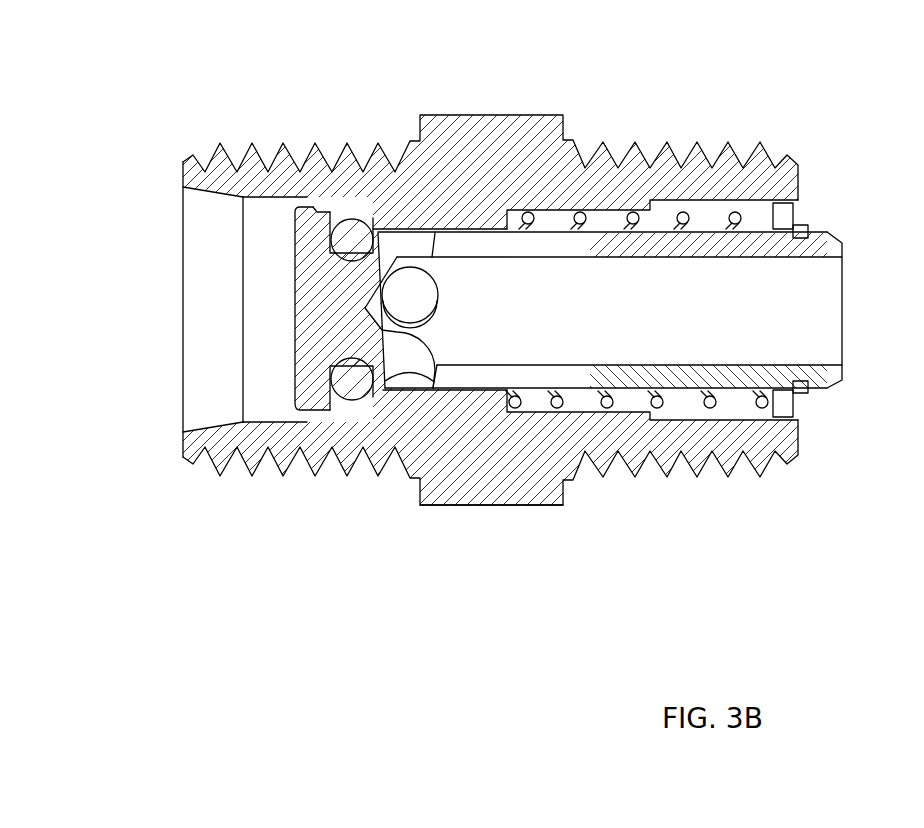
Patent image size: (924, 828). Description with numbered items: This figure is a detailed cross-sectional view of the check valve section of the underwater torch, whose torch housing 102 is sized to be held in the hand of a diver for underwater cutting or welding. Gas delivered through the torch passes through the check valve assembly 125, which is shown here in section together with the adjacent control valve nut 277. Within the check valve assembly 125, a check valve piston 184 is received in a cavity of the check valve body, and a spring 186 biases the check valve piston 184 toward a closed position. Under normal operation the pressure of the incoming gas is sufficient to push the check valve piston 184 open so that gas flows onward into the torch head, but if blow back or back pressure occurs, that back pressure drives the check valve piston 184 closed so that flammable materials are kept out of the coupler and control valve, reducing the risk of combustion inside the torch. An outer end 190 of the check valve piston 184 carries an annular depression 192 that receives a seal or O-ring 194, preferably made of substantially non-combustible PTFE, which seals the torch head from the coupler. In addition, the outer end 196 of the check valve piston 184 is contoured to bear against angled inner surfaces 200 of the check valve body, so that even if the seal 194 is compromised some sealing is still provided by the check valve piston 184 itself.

The torch housing 102 is at (408, 250).
The check valve assembly 125 is at (345, 140).
The check valve piston 184 is at (822, 383).
The spring 186 is at (710, 402).
The outer end of the check valve piston 190 is at (308, 358).
The annular depression 192 is at (350, 378).
The seal or O-ring 194 is at (345, 375).
The outer end of the check valve piston 196 is at (327, 210).
The angled inner surfaces 200 is at (343, 400).
The control valve nut 277 is at (460, 462).